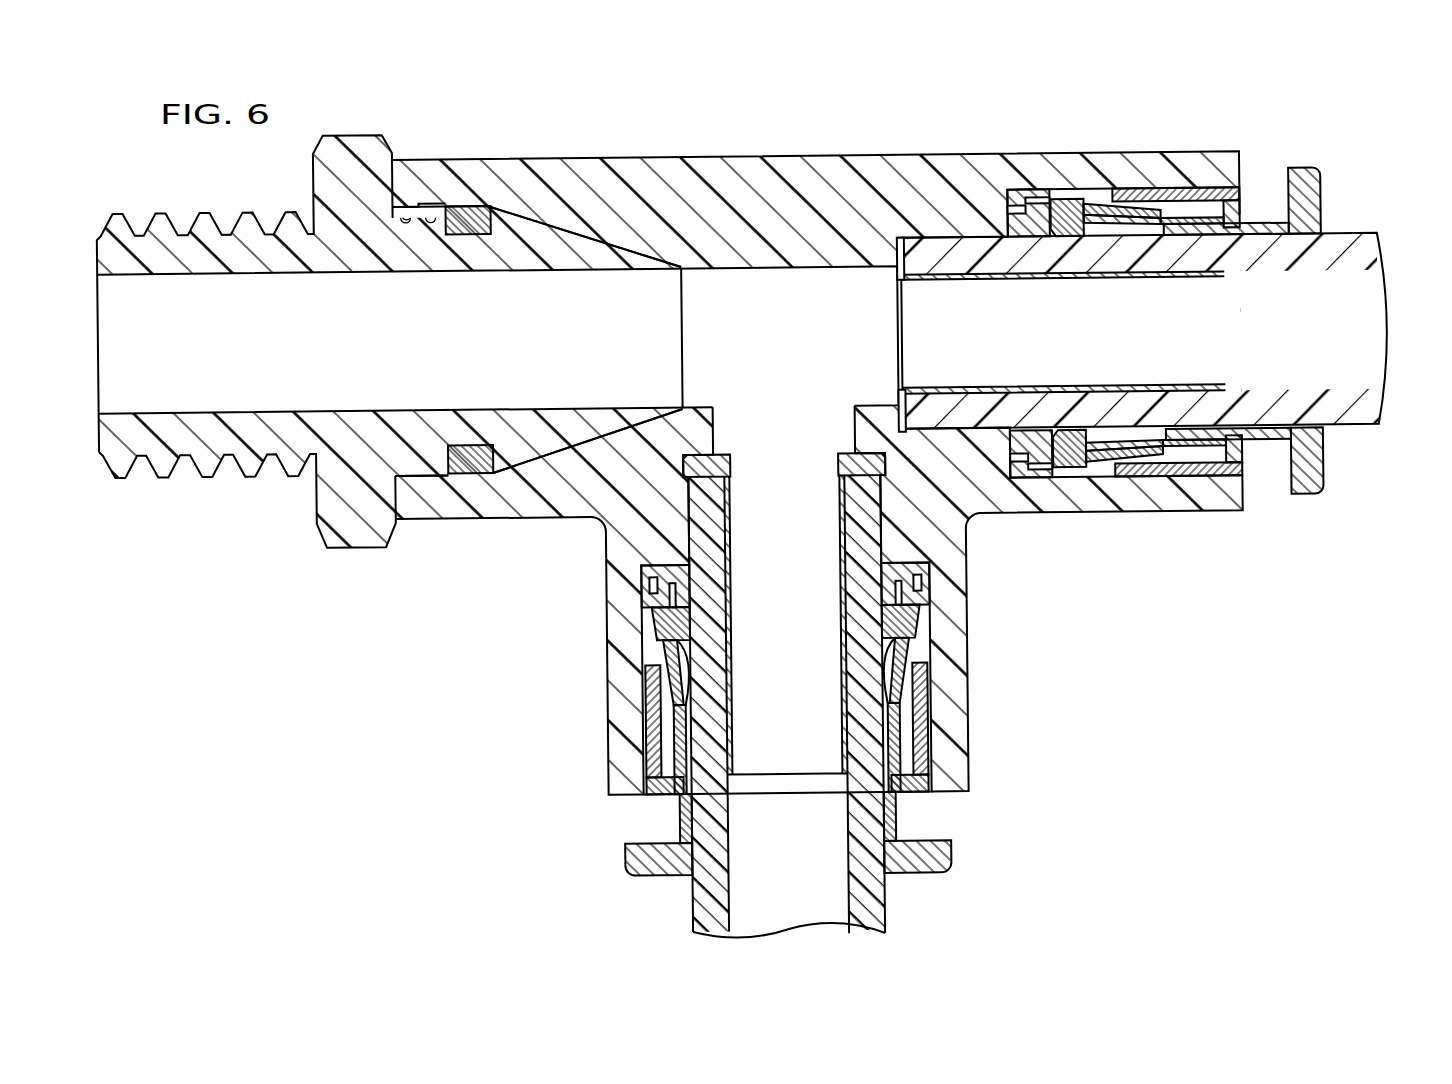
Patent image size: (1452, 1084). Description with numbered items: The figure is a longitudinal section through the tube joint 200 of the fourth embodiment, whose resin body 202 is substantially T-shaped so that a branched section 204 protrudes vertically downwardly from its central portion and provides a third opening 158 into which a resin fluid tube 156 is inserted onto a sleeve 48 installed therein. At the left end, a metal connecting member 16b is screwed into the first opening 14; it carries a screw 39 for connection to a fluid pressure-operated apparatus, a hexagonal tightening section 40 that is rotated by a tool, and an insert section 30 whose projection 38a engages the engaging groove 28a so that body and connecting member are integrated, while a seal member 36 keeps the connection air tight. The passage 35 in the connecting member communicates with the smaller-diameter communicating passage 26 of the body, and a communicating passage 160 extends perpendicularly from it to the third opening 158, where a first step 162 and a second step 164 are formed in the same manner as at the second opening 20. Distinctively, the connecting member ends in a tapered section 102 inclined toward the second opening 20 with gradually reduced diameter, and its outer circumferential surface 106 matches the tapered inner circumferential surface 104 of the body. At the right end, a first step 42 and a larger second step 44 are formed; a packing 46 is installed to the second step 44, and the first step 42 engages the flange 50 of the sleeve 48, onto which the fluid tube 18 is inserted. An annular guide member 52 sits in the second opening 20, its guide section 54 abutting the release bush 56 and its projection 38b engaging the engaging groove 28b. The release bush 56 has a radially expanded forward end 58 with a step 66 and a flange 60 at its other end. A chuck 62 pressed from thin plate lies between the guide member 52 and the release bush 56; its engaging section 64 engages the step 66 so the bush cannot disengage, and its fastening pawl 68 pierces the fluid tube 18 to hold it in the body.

The tube joint 200 is at (1315, 111).
The body 202 is at (762, 158).
The branched section 204 is at (967, 698).
The tightening section 40 is at (355, 150).
The connecting member 16b is at (320, 535).
The screw 39 is at (200, 478).
The passage 35 is at (282, 285).
The first opening 14 is at (402, 207).
The engaging groove 28a is at (436, 212).
The seal member 36 is at (468, 207).
The outer circumferential surface 106 is at (515, 474).
The tapered section 102 is at (585, 250).
The insert section 30 is at (420, 450).
The projection 38a is at (440, 478).
The inner circumferential surface 104 is at (585, 445).
The communicating passage 26 is at (715, 335).
The communicating passage 160 is at (803, 428).
The first step 162 is at (950, 530).
The second step 164 is at (930, 650).
The first step 42 is at (935, 240).
The third opening 158 is at (652, 786).
The fluid tube 18 is at (1362, 253).
The flange 50 is at (893, 270).
The packing 46 is at (1026, 200).
The second step 44 is at (1068, 215).
The fastening pawl 68 is at (1086, 228).
The sleeve 48 is at (1060, 246).
The engaging groove 28b is at (1176, 205).
The second opening 20 is at (1230, 200).
The step 66 is at (1122, 236).
The engaging section 64 is at (1150, 246).
The forward end 58 is at (1135, 352).
The flange 60 is at (1320, 188).
The release bush 56 is at (1325, 478).
The chuck 62 is at (1065, 470).
The projection 38b is at (1165, 485).
The guide member 52 is at (1226, 485).
The guide section 54 is at (1240, 472).
The fluid tube 156 is at (868, 905).